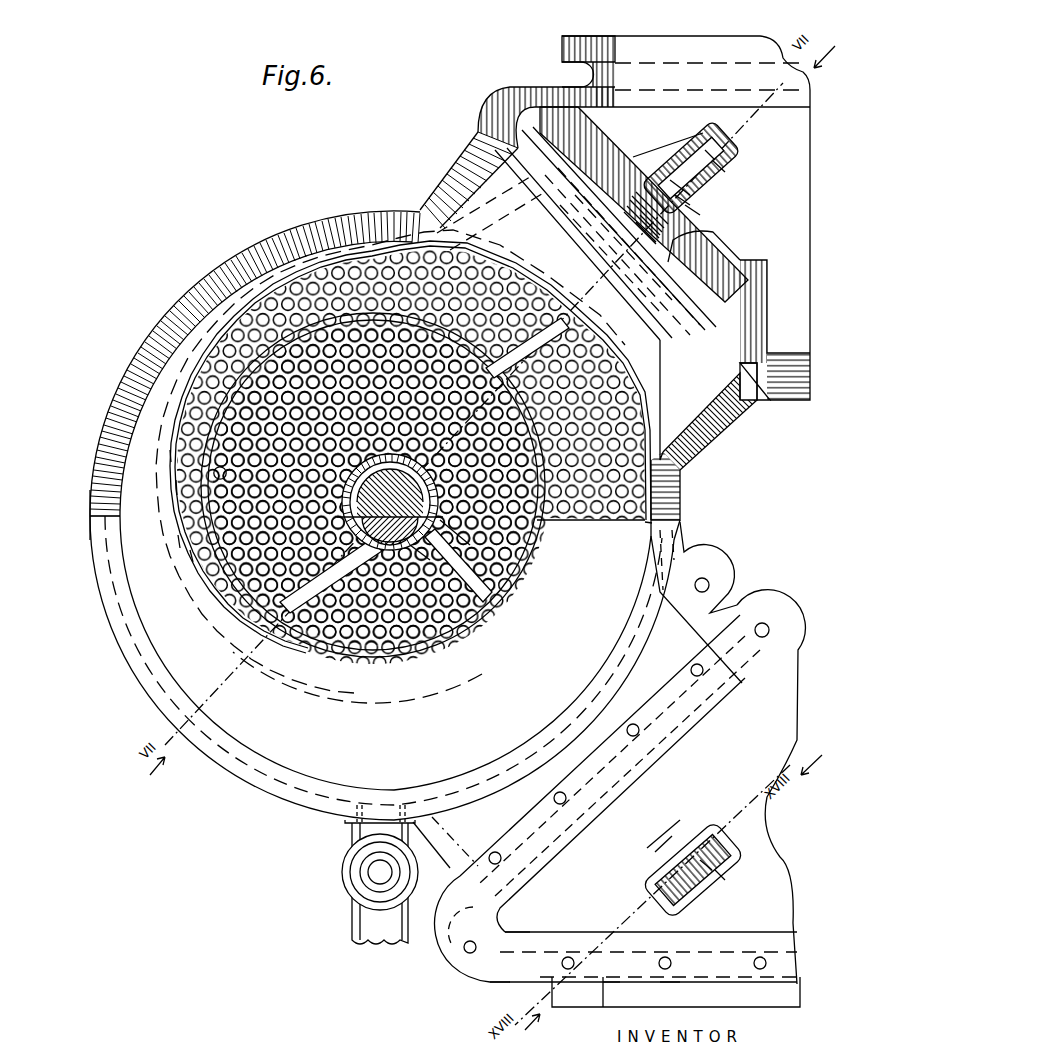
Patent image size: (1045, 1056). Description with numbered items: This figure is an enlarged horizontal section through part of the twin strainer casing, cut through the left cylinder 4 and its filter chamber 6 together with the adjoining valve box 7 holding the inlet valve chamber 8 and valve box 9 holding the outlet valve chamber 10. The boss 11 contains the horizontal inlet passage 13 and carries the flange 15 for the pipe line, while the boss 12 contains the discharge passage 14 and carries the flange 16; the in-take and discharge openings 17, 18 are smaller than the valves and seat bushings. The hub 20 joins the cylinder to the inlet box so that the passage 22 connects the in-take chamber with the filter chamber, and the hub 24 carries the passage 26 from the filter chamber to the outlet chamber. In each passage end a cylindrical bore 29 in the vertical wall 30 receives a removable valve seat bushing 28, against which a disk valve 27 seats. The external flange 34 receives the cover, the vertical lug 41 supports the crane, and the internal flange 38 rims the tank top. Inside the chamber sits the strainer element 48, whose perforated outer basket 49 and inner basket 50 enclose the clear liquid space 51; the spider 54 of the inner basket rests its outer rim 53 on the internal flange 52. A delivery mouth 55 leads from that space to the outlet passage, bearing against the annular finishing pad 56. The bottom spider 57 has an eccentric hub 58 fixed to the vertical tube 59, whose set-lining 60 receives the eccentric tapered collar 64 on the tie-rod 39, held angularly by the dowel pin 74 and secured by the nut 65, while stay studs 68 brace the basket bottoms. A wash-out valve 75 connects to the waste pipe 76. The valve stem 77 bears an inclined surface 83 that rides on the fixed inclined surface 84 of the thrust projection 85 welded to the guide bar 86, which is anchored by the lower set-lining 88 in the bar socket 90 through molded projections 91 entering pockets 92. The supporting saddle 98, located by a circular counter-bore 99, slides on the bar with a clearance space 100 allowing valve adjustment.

The cylinder 4 is at (95, 537).
The filter chamber 6 is at (97, 490).
The valve box 7 is at (550, 923).
The inlet valve chamber 8 is at (513, 940).
The valve box 9 is at (500, 105).
The outlet valve chamber 10 is at (553, 112).
The boss 11 is at (605, 958).
The boss 12 is at (605, 90).
The inlet passage 13 is at (706, 965).
The discharge passage 14 is at (792, 80).
The flange 15 is at (552, 985).
The flange 16 is at (565, 46).
The in-take opening 17 is at (640, 1007).
The discharge opening 18 is at (722, 38).
The hub 20 is at (712, 612).
The passage 22 is at (455, 842).
The hub 24 is at (712, 410).
The passage 26 is at (692, 465).
The disk valve 27 is at (746, 302).
The valve seat bushing 28 is at (758, 365).
The cylindrical bore 29 is at (505, 162).
The vertical wall 30 is at (690, 726).
The external flange 34 is at (458, 945).
The internal flange 38 is at (270, 792).
The tie-rod 39 is at (375, 555).
The vertical lug 41 is at (700, 572).
The strainer element 48 is at (180, 438).
The outer basket 49 is at (170, 457).
The inner basket 50 is at (213, 474).
The clear liquid space 51 is at (178, 489).
The internal flange 52 is at (178, 543).
The outer rim 53 is at (195, 558).
The spider 54 is at (275, 608).
The delivery mouth 55 is at (478, 248).
The annular finishing pad 56 is at (400, 215).
The bottom spider 57 is at (220, 350).
The eccentric hub 58 is at (480, 517).
The vertical tube 59 is at (445, 580).
The set-lining 60 is at (398, 555).
The eccentric tapered collar 64 is at (420, 560).
The nut 65 is at (668, 505).
The stay stud 68 is at (305, 345).
The dowel pin 74 is at (470, 545).
The wash-out valve 75 is at (343, 870).
The waste pipe 76 is at (355, 923).
The valve stem 77 is at (655, 200).
The inclined surface 83 is at (680, 192).
The fixed inclined surface 84 is at (690, 200).
The thrust projection 85 is at (678, 185).
The guide bar 86 is at (722, 166).
The lower set-lining 88 is at (650, 850).
The lower bar socket 90 is at (660, 840).
The molded projection 91 is at (700, 862).
The pocket 92 is at (715, 874).
The supporting saddle 98 is at (700, 175).
The circular counter-bore 99 is at (722, 246).
The clearance space 100 is at (733, 145).